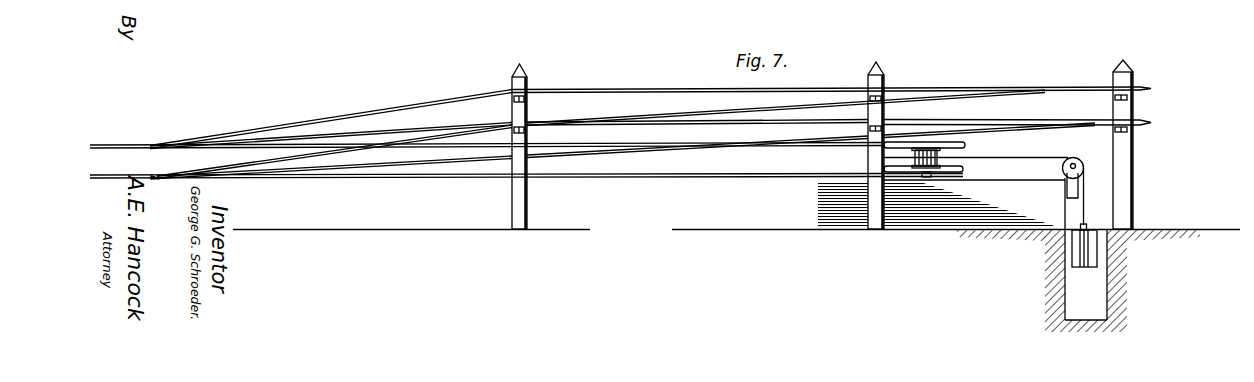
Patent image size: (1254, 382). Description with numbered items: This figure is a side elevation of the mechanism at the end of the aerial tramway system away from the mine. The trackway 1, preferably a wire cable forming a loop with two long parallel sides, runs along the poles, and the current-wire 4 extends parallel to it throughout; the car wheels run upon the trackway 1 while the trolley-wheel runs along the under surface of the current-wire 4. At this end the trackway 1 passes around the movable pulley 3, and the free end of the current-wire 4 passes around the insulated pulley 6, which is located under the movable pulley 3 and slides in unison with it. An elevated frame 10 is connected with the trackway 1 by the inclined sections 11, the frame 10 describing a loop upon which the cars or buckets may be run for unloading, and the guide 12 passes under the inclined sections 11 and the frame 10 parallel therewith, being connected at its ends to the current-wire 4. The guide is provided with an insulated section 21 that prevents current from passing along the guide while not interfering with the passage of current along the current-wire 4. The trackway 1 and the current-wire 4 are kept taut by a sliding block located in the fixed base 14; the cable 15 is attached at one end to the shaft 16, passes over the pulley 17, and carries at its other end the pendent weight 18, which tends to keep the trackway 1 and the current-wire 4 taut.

The trackway 1 is at (757, 147).
The movable pulley 3 is at (966, 146).
The current-wire 4 is at (757, 178).
The insulated pulley 6 is at (962, 170).
The frame 10 is at (718, 90).
The inclined sections 11 is at (431, 103).
The guide 12 is at (1072, 117).
The fixed base 14 is at (941, 203).
The cable 15 is at (1028, 157).
The shaft 16 is at (914, 158).
The pulley 17 is at (1085, 164).
The pendent weight 18 is at (1093, 231).
The insulated section 21 is at (158, 180).